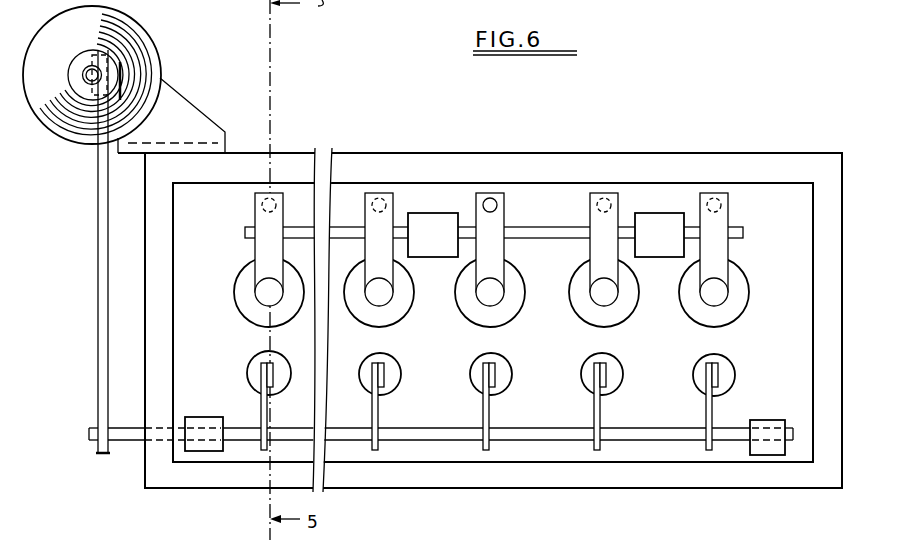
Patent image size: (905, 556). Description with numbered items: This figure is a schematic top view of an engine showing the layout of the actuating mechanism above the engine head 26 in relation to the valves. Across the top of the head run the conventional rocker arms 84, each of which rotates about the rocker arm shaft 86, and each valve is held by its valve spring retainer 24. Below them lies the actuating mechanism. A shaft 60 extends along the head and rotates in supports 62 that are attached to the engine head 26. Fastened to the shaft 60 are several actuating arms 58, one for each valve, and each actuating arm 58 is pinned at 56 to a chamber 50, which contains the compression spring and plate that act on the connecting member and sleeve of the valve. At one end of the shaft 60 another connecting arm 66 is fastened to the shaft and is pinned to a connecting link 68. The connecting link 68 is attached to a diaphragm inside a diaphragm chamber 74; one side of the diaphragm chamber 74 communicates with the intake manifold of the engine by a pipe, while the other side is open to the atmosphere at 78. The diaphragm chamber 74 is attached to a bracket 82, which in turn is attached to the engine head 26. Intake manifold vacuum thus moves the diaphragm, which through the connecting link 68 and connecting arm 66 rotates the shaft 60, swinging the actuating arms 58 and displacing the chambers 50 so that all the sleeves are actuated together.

The valve spring retainer 24 is at (507, 312).
The engine head 26 is at (685, 356).
The chamber 50 is at (256, 366).
The pin 56 is at (273, 370).
The actuating arm 58 is at (261, 410).
The shaft 60 is at (130, 434).
The supports 62 is at (203, 442).
The connecting arm 66 is at (101, 365).
The connecting link 68 is at (72, 114).
The diaphragm chamber 74 is at (140, 45).
The atmospheric opening 78 is at (88, 70).
The bracket 82 is at (195, 118).
The rocker arms 84 is at (388, 222).
The rocker arm shaft 86 is at (548, 232).